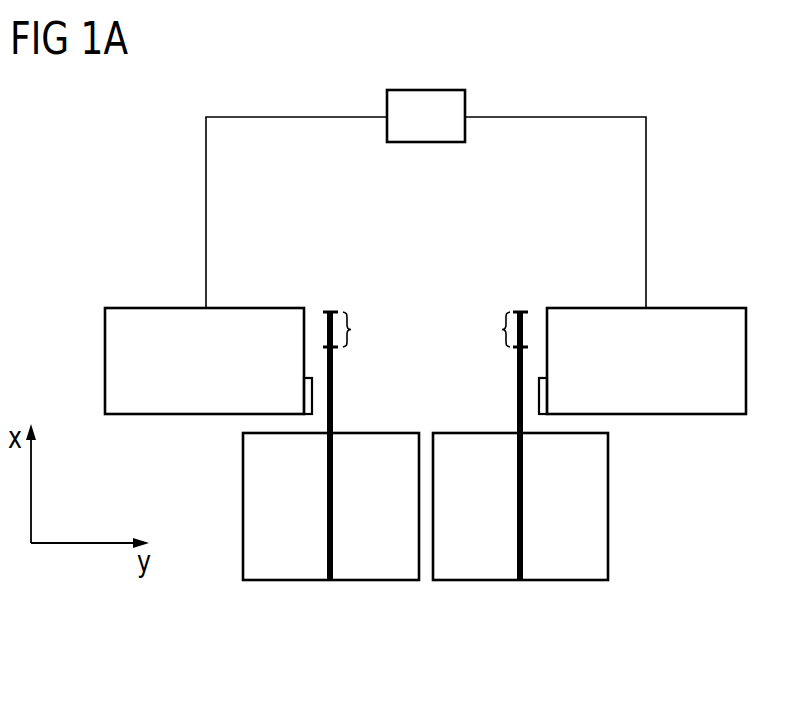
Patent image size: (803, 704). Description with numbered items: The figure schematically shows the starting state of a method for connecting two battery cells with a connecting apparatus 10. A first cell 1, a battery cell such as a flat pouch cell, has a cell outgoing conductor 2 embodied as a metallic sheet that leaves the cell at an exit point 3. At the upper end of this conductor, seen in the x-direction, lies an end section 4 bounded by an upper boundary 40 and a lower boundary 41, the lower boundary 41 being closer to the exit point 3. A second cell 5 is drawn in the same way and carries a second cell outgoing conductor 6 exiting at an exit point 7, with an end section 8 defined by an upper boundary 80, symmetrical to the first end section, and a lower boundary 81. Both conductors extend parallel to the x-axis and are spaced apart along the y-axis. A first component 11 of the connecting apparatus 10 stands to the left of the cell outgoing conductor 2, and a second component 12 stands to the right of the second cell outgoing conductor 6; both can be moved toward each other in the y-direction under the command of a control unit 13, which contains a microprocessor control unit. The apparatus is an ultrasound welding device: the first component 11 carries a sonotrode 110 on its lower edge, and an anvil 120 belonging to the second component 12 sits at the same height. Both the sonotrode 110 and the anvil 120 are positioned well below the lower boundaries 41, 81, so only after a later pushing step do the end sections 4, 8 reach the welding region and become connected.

The connecting apparatus 10 is at (578, 72).
The control unit 13 is at (425, 90).
The first component 11 is at (157, 307).
The second component 12 is at (682, 307).
The sonotrode 110 is at (310, 415).
The anvil 120 is at (541, 415).
The first cell 1 is at (289, 604).
The second cell 5 is at (477, 604).
The cell outgoing conductor 2 is at (333, 386).
The second cell outgoing conductor 6 is at (518, 388).
The upper boundary 40 is at (332, 310).
The lower boundary 41 is at (338, 348).
The upper boundary 80 is at (518, 310).
The lower boundary 81 is at (514, 348).
The end section 4 is at (355, 328).
The end section 8 is at (497, 328).
The exit point 3 is at (358, 411).
The exit point 7 is at (494, 411).